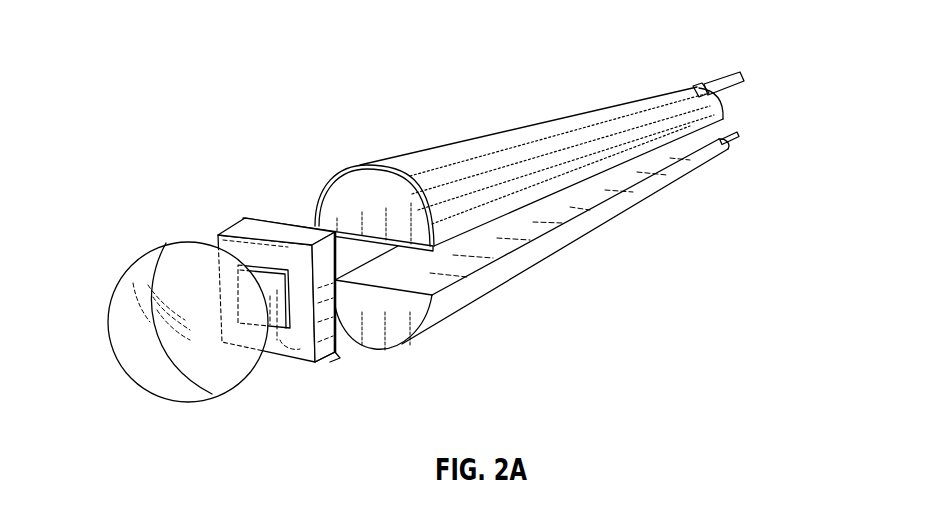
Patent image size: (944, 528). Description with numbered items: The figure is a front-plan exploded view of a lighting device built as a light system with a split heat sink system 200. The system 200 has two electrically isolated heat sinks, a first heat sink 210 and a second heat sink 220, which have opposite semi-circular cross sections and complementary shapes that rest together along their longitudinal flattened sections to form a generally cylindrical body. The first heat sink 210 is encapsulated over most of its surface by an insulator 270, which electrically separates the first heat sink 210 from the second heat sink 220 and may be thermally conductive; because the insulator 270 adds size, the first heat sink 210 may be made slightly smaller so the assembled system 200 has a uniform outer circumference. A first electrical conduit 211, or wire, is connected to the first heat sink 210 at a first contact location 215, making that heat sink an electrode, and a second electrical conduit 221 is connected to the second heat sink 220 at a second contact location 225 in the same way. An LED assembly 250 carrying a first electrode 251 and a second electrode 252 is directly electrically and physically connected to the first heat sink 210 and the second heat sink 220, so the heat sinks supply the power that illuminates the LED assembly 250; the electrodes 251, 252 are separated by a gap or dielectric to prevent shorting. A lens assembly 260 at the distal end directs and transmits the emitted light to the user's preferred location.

The light system with a split heat sink system 200 is at (248, 62).
The first heat sink 210 is at (352, 182).
The first electrical conduit 211 is at (723, 80).
The first contact location 215 is at (696, 86).
The second heat sink 220 is at (488, 283).
The second electrical conduit 221 is at (738, 137).
The second contact location 225 is at (726, 149).
The LED assembly 250 is at (285, 349).
The first electrode 251 is at (339, 352).
The second electrode 252 is at (243, 219).
The lens assembly 260 is at (160, 262).
The insulator 270 is at (517, 125).